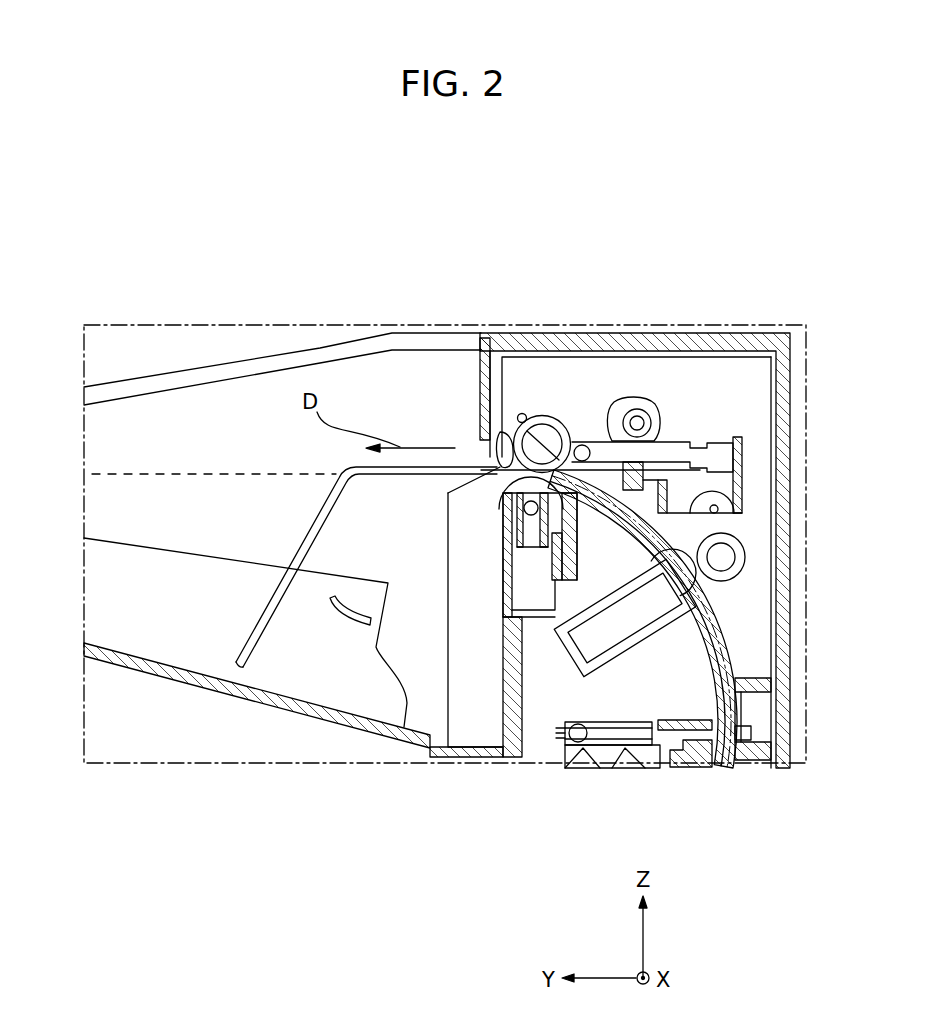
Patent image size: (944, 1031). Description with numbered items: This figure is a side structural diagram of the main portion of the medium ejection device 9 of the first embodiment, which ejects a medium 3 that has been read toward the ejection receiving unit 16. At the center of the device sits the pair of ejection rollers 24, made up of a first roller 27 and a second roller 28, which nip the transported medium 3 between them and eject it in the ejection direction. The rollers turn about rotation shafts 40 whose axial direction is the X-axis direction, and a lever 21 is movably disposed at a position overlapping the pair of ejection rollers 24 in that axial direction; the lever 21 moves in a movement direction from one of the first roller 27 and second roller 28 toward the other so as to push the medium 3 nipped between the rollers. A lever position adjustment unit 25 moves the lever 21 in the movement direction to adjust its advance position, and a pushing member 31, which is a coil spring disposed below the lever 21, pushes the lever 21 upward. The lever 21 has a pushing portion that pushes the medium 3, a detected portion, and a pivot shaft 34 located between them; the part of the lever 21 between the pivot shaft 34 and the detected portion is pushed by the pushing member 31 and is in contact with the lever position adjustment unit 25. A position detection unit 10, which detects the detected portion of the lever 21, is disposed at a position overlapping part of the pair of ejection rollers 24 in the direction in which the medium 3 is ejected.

The medium 3 is at (148, 473).
The medium ejection device 9 is at (664, 397).
The position detection unit 10 is at (722, 458).
The ejection receiving unit 16 is at (123, 652).
The lever 21 is at (499, 462).
The pair of ejection rollers 24 is at (503, 555).
The lever position adjustment unit 25 is at (613, 400).
The first roller 27 is at (513, 428).
The second roller 28 is at (503, 478).
The pushing member 31 is at (700, 471).
The pivot shaft 34 is at (583, 445).
The rotation shafts 40 is at (548, 440).